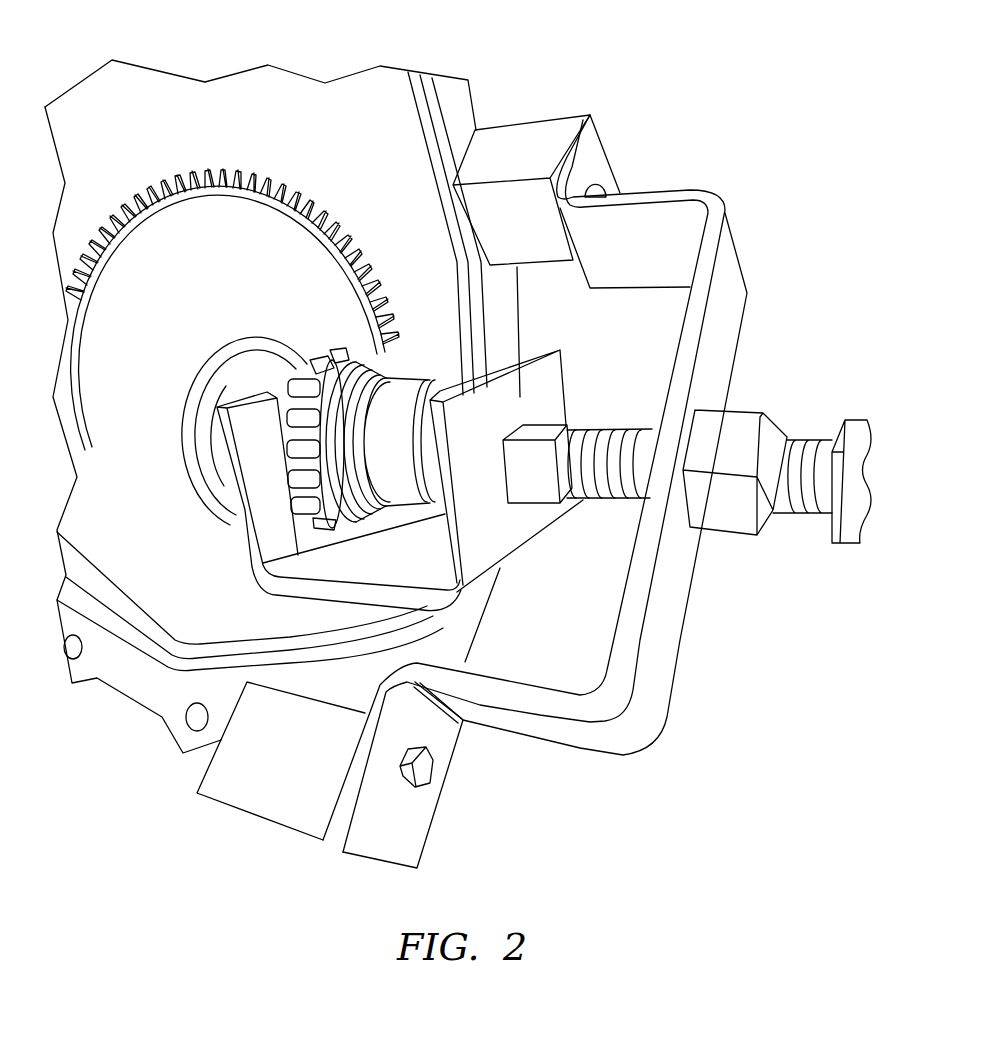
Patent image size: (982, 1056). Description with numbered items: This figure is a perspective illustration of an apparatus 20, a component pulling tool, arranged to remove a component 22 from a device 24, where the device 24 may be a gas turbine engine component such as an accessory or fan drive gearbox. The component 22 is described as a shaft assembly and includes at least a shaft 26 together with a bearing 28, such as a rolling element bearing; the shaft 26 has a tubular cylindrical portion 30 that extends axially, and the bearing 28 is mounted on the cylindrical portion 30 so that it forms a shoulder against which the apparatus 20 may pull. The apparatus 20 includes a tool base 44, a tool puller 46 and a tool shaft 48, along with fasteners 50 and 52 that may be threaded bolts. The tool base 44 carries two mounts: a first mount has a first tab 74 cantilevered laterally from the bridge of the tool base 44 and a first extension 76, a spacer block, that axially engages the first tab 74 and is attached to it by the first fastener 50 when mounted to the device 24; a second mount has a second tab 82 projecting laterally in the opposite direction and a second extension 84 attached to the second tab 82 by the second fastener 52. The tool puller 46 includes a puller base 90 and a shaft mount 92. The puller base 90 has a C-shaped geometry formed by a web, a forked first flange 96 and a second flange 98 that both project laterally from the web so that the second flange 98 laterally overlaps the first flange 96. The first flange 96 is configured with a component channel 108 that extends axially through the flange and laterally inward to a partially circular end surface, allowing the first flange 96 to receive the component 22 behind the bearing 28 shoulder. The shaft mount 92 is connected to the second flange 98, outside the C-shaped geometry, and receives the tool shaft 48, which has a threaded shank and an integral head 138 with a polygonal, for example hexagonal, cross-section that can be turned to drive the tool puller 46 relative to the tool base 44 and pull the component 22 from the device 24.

The apparatus 20 is at (806, 386).
The component 22 is at (340, 332).
The device 24 is at (482, 76).
The shaft 26 is at (410, 395).
The bearing 28 is at (308, 370).
The cylindrical portion 30 is at (313, 418).
The tool base 44 is at (700, 178).
The tool puller 46 is at (226, 528).
The tool shaft 48 is at (808, 556).
The first fastener 50 is at (427, 768).
The second fastener 52 is at (600, 184).
The first tab 74 is at (430, 847).
The first extension 76 is at (257, 823).
The second tab 82 is at (593, 133).
The second extension 84 is at (530, 115).
The puller base 90 is at (577, 380).
The shaft mount 92 is at (533, 513).
The first flange 96 is at (221, 470).
The second flange 98 is at (457, 543).
The component channel 108 is at (278, 391).
The head 138 is at (843, 542).